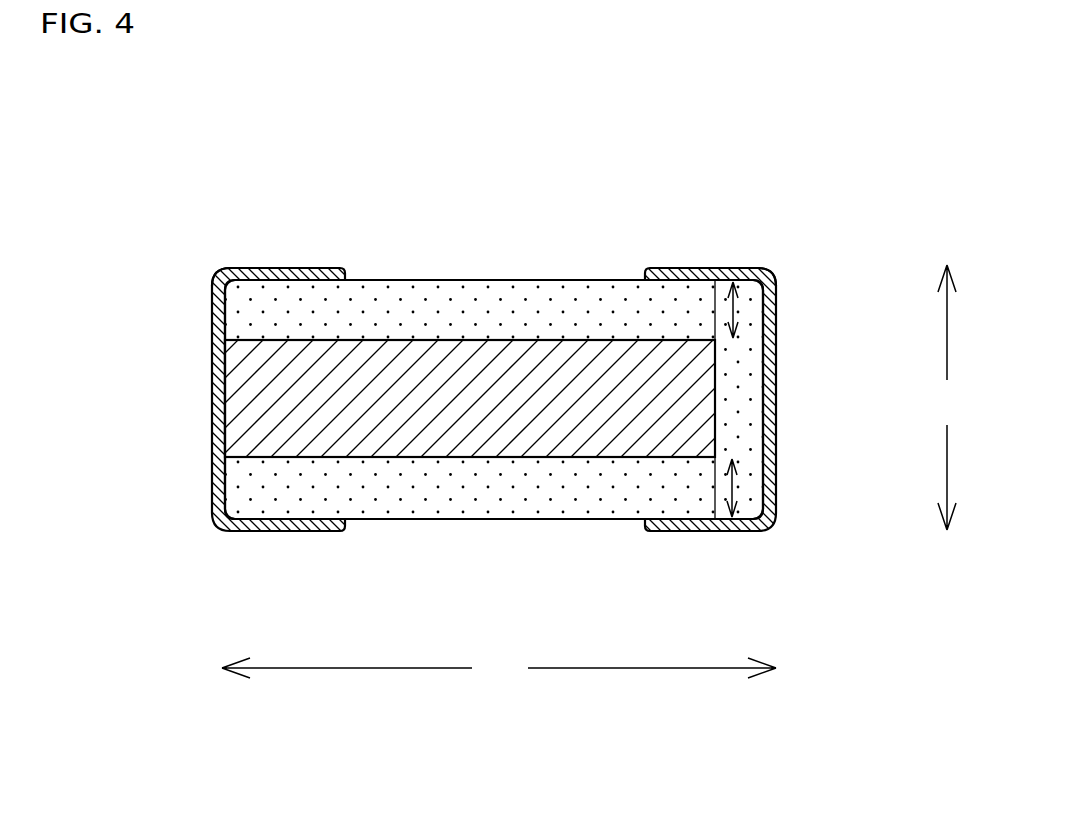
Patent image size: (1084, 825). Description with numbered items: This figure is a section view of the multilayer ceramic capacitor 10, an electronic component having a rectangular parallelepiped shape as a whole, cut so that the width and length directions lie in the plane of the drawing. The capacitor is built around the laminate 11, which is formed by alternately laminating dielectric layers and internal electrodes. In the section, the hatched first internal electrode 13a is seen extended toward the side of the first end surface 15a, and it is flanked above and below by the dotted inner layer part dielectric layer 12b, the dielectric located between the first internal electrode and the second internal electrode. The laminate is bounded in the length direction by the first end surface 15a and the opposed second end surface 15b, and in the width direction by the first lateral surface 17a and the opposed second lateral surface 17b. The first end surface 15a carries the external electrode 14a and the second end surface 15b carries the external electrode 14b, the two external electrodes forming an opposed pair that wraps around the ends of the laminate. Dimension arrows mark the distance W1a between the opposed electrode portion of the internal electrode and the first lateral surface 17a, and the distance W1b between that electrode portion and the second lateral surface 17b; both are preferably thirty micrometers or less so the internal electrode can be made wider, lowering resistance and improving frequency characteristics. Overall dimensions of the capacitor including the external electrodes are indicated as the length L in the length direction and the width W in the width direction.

The multilayer ceramic capacitor 10 is at (687, 190).
The laminate 11 is at (618, 277).
The inner layer part dielectric layer 12b is at (465, 289).
The first internal electrode 13a is at (228, 430).
The external electrode 14a is at (267, 423).
The external electrode 14b is at (778, 405).
The first end surface 15a is at (212, 335).
The second end surface 15b is at (777, 328).
The first lateral surface 17a is at (437, 522).
The second lateral surface 17b is at (390, 277).
The distance W1a is at (732, 488).
The distance W1b is at (735, 312).
The width W is at (946, 397).
The length L is at (499, 671).